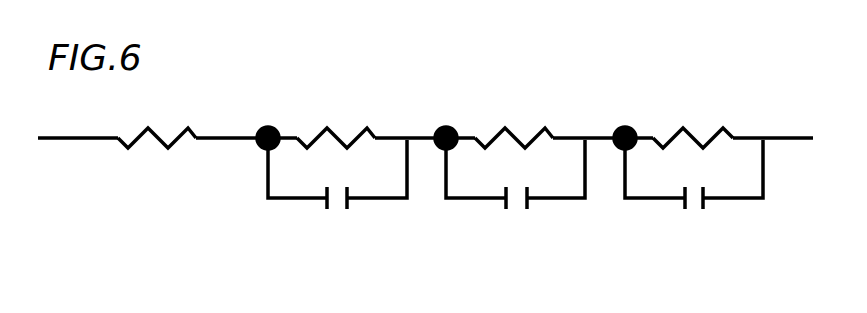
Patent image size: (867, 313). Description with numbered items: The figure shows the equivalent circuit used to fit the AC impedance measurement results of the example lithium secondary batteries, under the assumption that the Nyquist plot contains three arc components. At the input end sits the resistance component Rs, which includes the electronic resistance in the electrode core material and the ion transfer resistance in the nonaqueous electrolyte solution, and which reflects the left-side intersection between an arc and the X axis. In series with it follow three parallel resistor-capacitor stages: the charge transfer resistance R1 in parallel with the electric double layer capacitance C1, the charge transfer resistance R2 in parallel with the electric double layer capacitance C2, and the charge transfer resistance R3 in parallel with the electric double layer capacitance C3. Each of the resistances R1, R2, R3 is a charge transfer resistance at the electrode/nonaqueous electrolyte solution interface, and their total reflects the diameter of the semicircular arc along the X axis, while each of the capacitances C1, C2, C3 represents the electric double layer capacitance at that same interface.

The resistance component Rs is at (157, 124).
The charge transfer resistance R1 is at (336, 124).
The electric double layer capacitance C1 is at (337, 174).
The charge transfer resistance R2 is at (514, 124).
The electric double layer capacitance C2 is at (515, 174).
The charge transfer resistance R3 is at (693, 124).
The electric double layer capacitance C3 is at (694, 174).